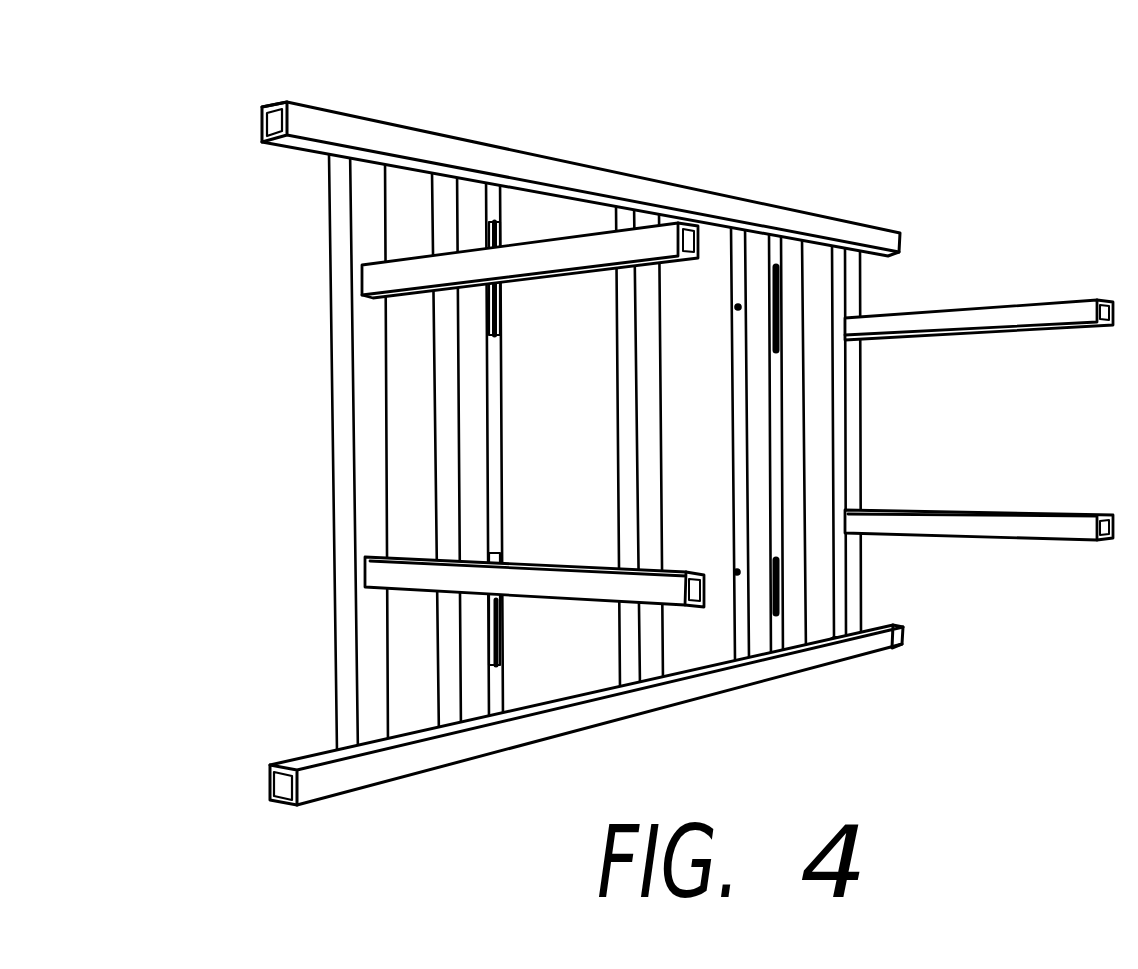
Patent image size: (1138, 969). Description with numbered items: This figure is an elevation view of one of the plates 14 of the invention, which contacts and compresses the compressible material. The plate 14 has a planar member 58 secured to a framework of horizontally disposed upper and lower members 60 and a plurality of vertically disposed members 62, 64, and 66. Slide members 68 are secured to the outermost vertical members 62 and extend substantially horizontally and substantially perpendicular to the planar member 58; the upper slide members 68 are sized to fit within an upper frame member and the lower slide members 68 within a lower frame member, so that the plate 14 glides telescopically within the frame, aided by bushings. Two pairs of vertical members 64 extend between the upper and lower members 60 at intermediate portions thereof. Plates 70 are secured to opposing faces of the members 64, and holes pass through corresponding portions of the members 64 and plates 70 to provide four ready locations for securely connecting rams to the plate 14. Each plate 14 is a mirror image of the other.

The plate 14 is at (625, 453).
The planar member 58 is at (745, 292).
The upper and lower members 60 is at (308, 115).
The outermost vertical members 62 is at (345, 455).
The vertical members 64 is at (466, 186).
The vertical member 66 is at (650, 297).
The slide members 68 is at (615, 248).
The plates 70 is at (492, 312).